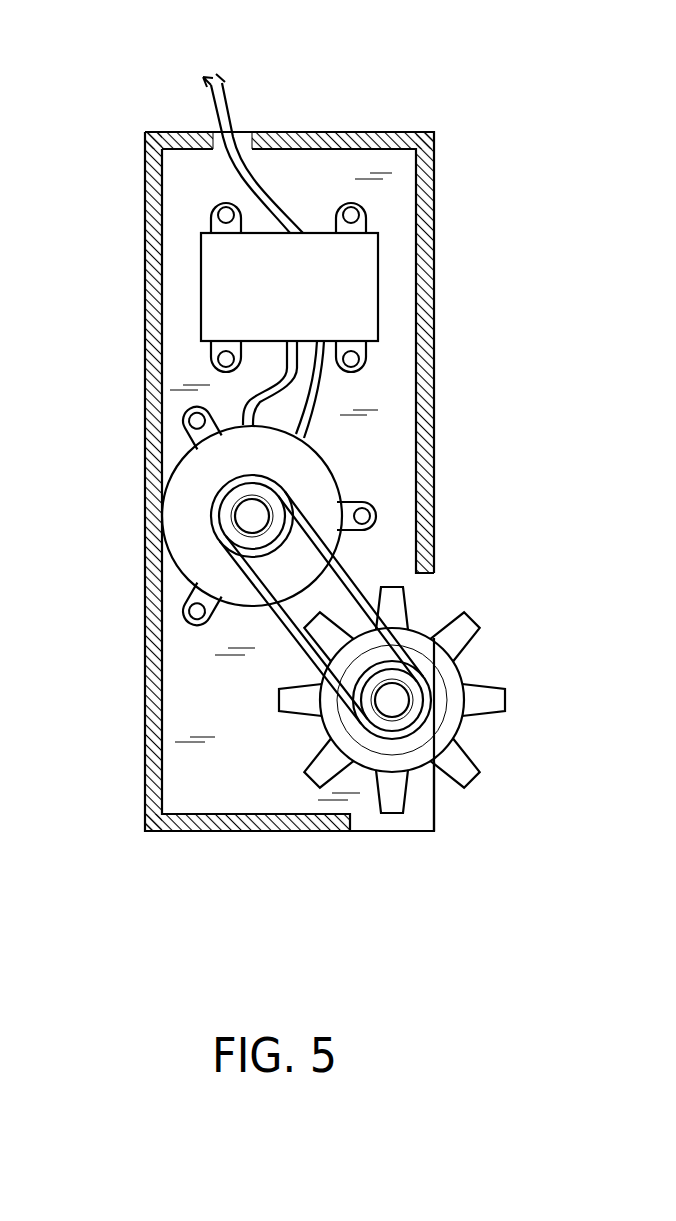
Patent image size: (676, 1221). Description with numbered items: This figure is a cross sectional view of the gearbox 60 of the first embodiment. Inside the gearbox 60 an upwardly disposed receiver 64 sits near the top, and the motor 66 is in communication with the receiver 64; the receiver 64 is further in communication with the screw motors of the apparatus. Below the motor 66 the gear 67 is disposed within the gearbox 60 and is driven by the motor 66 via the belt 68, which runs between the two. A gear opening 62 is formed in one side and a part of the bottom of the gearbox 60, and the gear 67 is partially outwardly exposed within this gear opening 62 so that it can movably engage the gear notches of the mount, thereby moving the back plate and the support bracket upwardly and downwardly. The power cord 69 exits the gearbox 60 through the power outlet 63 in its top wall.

The gearbox 60 is at (370, 132).
The gear opening 62 is at (428, 793).
The power outlet 63 is at (252, 138).
The receiver 64 is at (352, 297).
The motor 66 is at (198, 473).
The gear 67 is at (477, 632).
The belt 68 is at (350, 566).
The power cord 69 is at (223, 95).